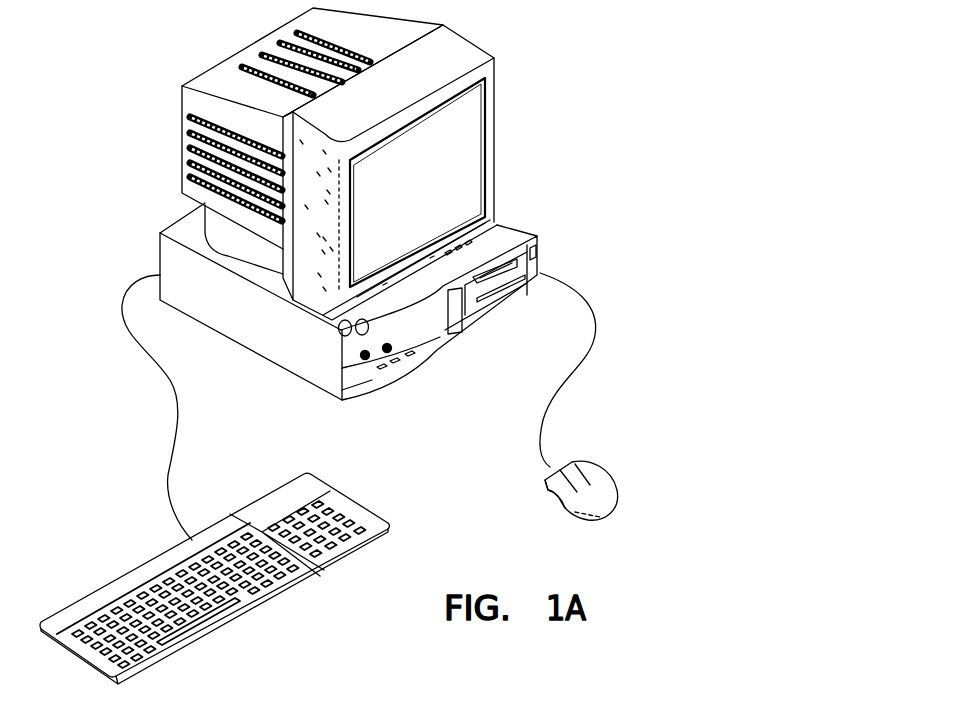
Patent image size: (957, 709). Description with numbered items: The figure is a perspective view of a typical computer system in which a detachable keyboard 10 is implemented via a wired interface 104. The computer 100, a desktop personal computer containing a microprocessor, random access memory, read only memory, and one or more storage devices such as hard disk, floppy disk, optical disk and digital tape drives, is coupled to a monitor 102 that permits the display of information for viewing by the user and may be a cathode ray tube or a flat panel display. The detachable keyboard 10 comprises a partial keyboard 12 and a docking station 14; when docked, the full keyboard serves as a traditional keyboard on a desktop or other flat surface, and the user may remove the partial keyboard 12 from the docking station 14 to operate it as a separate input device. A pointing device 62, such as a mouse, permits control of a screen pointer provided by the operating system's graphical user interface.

The detachable keyboard 10 is at (128, 553).
The partial keyboard 12 is at (225, 618).
The docking station 14 is at (352, 543).
The pointing device 62 is at (593, 473).
The computer 100 is at (297, 362).
The monitor 102 is at (462, 58).
The wired interface 104 is at (150, 378).